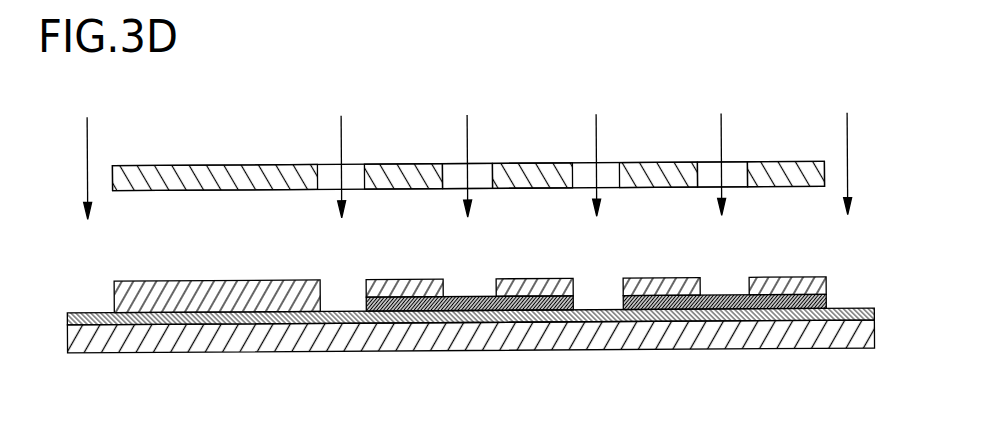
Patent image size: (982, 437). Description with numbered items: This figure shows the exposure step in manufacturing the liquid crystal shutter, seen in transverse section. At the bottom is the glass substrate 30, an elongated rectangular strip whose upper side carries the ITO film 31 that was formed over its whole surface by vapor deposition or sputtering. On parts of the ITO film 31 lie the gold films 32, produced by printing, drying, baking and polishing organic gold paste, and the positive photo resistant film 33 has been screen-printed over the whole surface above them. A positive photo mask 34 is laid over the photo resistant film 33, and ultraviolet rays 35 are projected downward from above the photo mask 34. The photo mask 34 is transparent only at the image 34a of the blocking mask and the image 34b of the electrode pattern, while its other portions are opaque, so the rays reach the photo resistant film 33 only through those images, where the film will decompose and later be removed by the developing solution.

The glass substrate 30 is at (866, 338).
The ITO film 31 is at (858, 312).
The gold film 32 is at (467, 300).
The photo resistant film 33 is at (398, 290).
The photo mask 34 is at (216, 176).
The image of the blocking mask 34a is at (738, 170).
The image of the electrode pattern 34b is at (478, 170).
The ultraviolet rays 35 is at (344, 130).